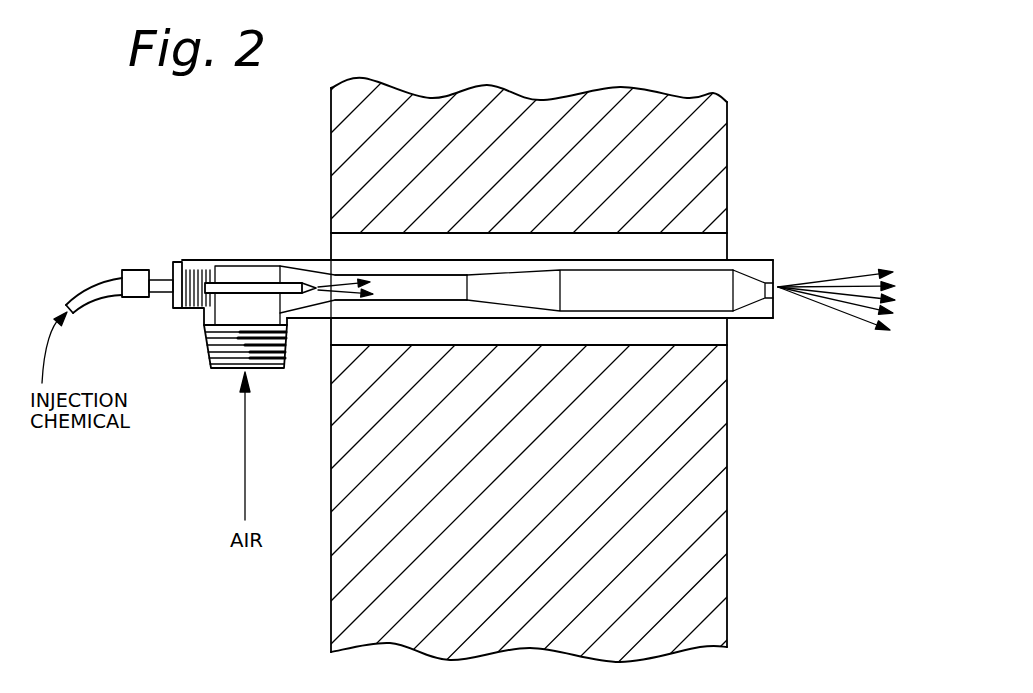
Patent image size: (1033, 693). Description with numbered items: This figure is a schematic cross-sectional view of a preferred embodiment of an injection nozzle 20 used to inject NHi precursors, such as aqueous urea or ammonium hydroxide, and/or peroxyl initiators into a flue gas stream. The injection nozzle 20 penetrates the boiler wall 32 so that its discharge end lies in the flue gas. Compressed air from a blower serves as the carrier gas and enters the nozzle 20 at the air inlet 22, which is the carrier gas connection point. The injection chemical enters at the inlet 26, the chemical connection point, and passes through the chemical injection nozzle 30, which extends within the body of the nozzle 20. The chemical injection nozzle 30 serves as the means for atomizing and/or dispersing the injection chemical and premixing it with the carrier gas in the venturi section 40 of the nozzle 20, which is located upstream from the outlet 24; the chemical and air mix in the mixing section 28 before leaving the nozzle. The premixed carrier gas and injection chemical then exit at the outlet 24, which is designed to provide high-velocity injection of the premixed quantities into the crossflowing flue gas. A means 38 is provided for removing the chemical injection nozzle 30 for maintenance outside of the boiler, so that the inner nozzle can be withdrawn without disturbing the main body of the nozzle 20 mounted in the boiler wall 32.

The injection nozzle 20 is at (252, 236).
The air inlet 22 is at (277, 368).
The outlet 24 is at (746, 260).
The inlet 26 is at (98, 298).
The mixing section 28 is at (403, 285).
The chemical injection nozzle 30 is at (278, 272).
The boiler wall 32 is at (713, 145).
The means for removing the chemical injection nozzle 38 is at (195, 273).
The venturi section 40 is at (440, 285).